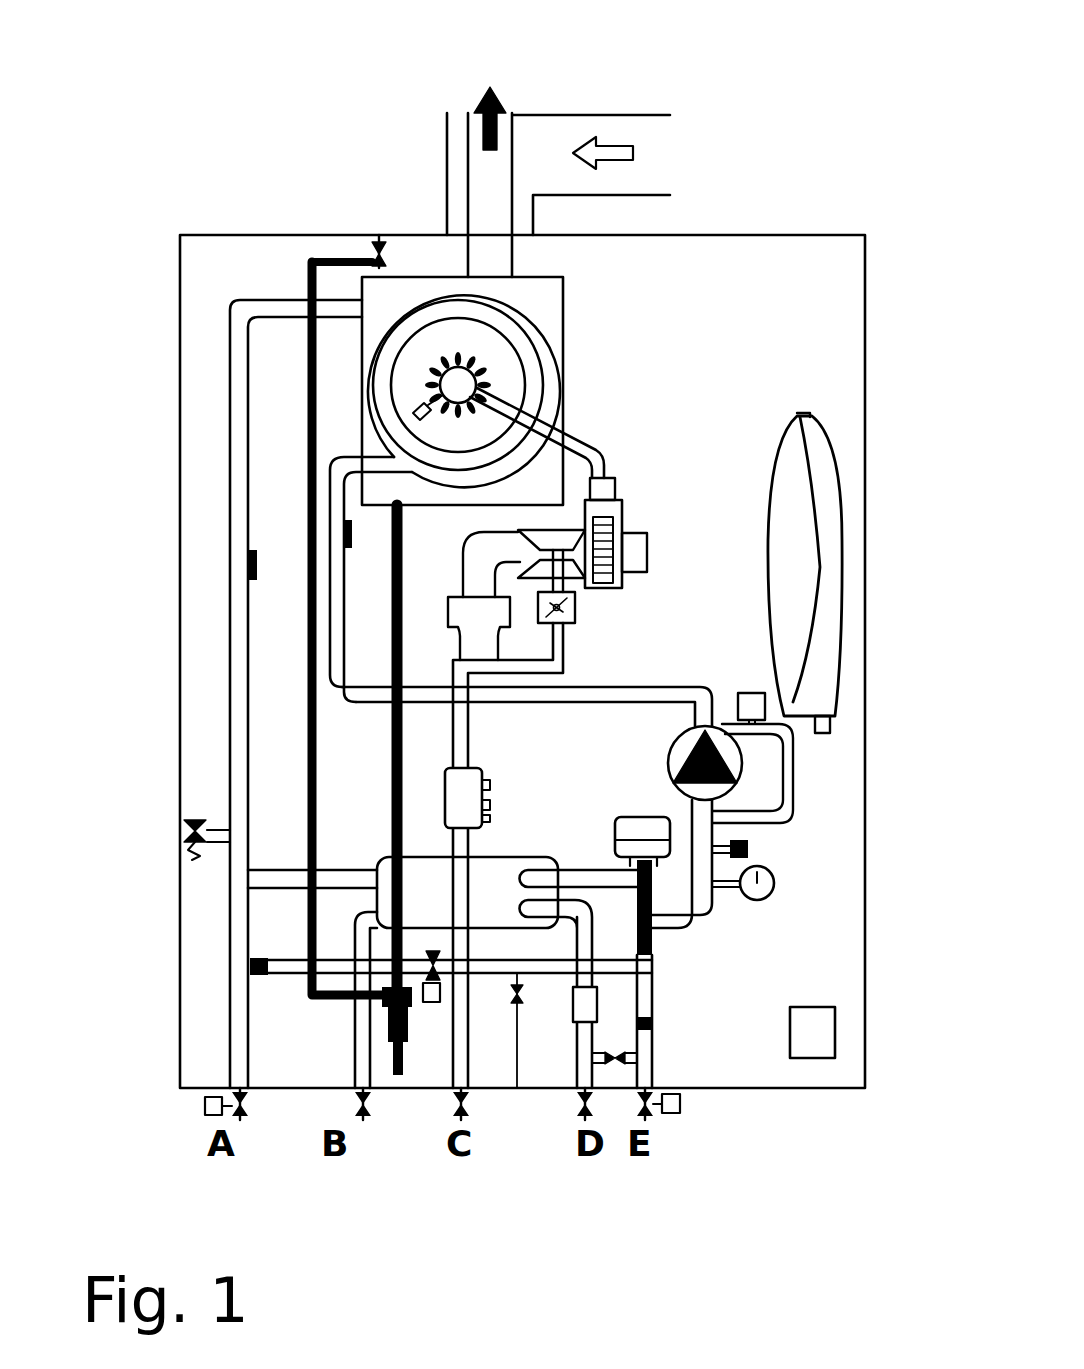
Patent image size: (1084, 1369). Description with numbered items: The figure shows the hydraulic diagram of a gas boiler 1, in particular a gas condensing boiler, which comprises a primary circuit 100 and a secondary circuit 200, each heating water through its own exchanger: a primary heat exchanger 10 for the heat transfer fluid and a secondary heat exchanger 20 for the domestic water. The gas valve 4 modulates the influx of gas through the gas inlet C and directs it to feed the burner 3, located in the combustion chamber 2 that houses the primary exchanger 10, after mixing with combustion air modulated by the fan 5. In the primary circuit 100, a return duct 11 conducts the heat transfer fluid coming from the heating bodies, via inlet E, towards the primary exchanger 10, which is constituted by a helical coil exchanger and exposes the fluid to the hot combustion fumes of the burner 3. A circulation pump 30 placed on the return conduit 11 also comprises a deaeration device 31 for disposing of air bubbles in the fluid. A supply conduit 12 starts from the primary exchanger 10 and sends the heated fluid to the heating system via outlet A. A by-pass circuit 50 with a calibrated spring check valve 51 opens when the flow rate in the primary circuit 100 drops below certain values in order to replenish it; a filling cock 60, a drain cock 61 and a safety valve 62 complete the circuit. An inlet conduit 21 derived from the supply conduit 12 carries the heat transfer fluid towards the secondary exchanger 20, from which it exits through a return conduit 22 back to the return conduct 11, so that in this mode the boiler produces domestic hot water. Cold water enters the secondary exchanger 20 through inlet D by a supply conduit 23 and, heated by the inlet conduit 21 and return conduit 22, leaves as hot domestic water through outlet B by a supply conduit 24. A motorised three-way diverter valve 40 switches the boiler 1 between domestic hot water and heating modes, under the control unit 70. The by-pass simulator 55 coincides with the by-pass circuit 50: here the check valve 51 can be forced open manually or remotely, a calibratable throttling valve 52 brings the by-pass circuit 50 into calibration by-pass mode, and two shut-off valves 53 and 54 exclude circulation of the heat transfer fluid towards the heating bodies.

The gas boiler 1 is at (813, 204).
The combustion chamber 2 is at (540, 468).
The burner 3 is at (468, 384).
The gas valve 4 is at (458, 786).
The fan 5 is at (622, 528).
The primary heat exchanger 10 is at (563, 368).
The return duct 11 is at (583, 706).
The supply conduit 12 is at (230, 492).
The secondary heat exchanger 20 is at (497, 873).
The inlet conduit 21 is at (348, 868).
The return conduit 22 is at (587, 868).
The supply conduit of cold water 23 is at (652, 957).
The supply conduit 24 is at (357, 1054).
The circulation pump 30 is at (740, 757).
The deaeration device 31 is at (764, 732).
The motorised three-way diverter valve 40 is at (750, 844).
The by-pass circuit 50 is at (290, 973).
The calibrated spring check valve 51 is at (250, 964).
The calibratable throttling valve 52 is at (428, 1004).
The shut-off valve 53 is at (205, 1110).
The shut-off valve 54 is at (680, 1104).
The by-pass simulator 55 is at (130, 1030).
The filling cock 60 is at (600, 1091).
The drain cock 61 is at (515, 1006).
The safety valve 62 is at (184, 830).
The control unit 70 is at (836, 1033).
The primary circuit 100 is at (648, 683).
The secondary circuit 200 is at (563, 935).